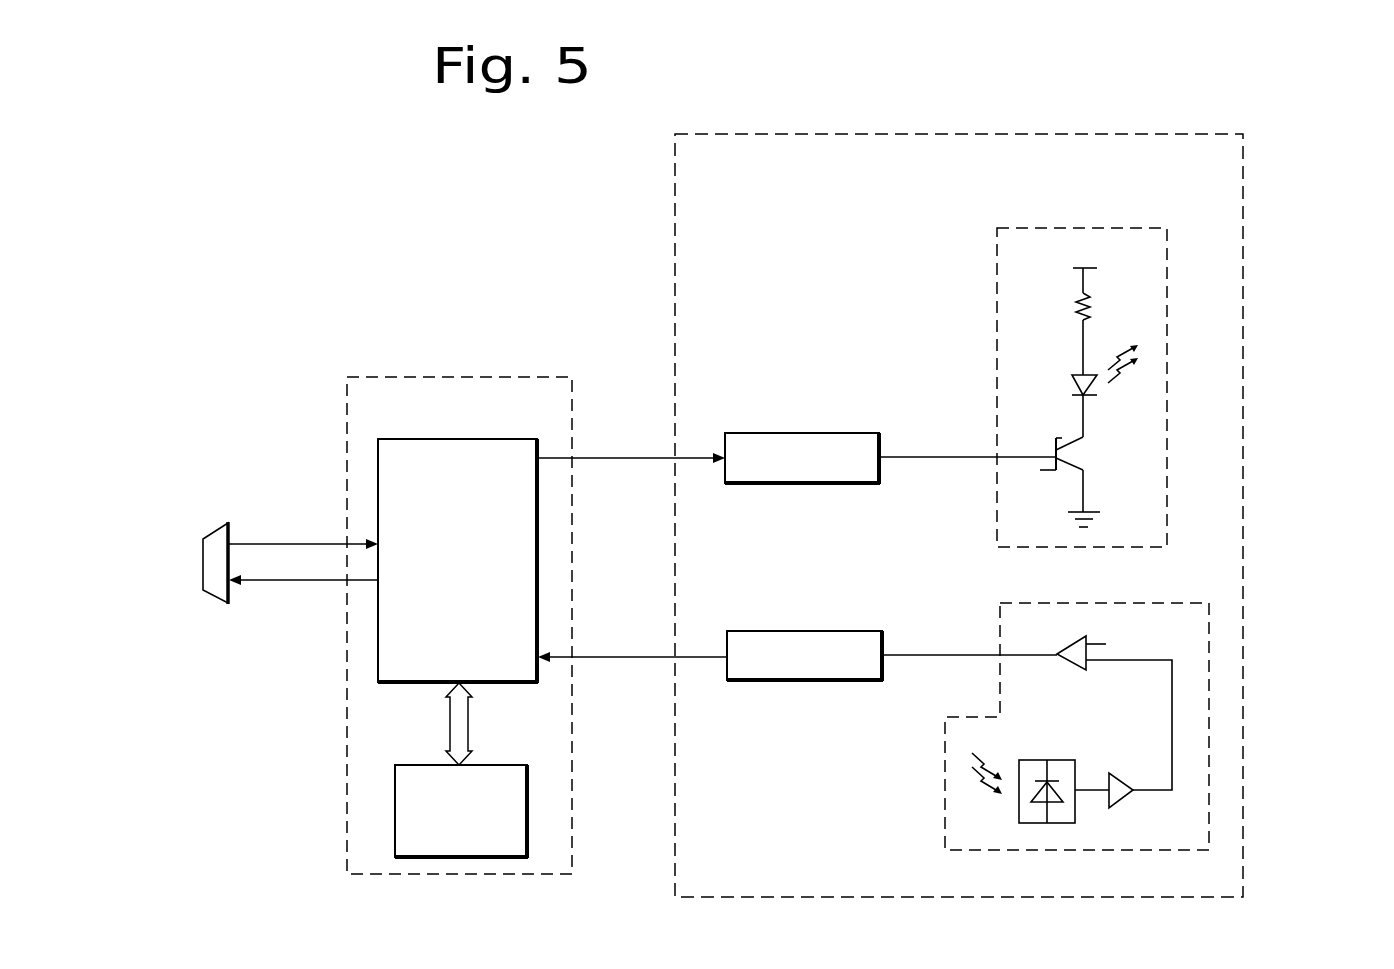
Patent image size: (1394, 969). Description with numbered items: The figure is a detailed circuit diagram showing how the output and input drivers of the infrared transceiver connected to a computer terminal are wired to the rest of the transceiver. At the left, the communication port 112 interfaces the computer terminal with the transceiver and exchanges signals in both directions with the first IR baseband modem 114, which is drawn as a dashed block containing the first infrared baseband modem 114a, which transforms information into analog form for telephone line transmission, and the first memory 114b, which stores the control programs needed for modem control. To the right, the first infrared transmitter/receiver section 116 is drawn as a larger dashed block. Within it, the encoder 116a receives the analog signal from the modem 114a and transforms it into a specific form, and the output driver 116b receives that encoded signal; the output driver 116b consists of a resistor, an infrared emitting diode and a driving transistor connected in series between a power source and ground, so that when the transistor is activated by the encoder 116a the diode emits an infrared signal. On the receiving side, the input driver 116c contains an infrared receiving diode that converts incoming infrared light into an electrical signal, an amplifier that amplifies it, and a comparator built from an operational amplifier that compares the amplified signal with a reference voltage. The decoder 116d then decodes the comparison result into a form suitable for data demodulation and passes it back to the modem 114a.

The communication port 112 is at (218, 603).
The first infrared baseband modem 114 is at (527, 377).
The first infrared baseband modem 114a is at (471, 439).
The first memory 114b is at (505, 765).
The first infrared transmitter/receiver section 116 is at (1243, 505).
The encoder 116a is at (795, 433).
The output driver 116b is at (1078, 228).
The input driver 116c is at (943, 770).
The decoder 116d is at (797, 631).